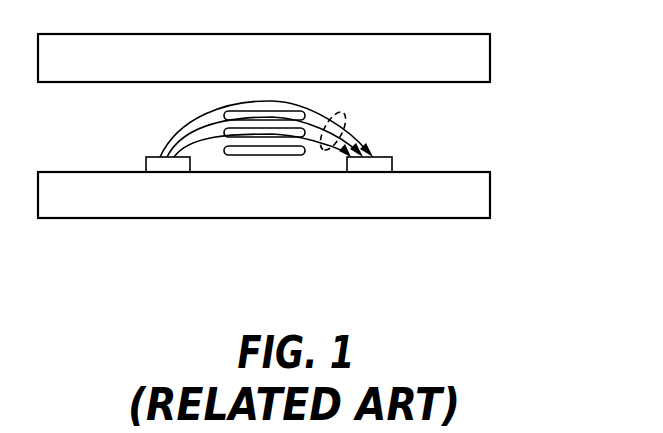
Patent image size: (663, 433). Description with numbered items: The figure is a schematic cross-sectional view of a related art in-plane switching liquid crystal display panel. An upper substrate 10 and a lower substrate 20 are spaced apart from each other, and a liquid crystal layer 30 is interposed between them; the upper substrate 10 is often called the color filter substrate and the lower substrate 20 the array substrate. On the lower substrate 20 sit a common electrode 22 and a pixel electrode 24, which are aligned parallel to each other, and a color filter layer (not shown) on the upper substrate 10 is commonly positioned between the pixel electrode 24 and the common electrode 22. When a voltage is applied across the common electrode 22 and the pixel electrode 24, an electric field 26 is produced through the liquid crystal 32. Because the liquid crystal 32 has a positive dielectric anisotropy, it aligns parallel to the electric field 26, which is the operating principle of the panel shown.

The upper substrate 10 is at (512, 31).
The lower substrate 20 is at (512, 169).
The common electrode 22 is at (167, 163).
The pixel electrode 24 is at (375, 163).
The electric field 26 is at (326, 147).
The liquid crystal layer 30 is at (362, 198).
The liquid crystal 32 is at (267, 155).